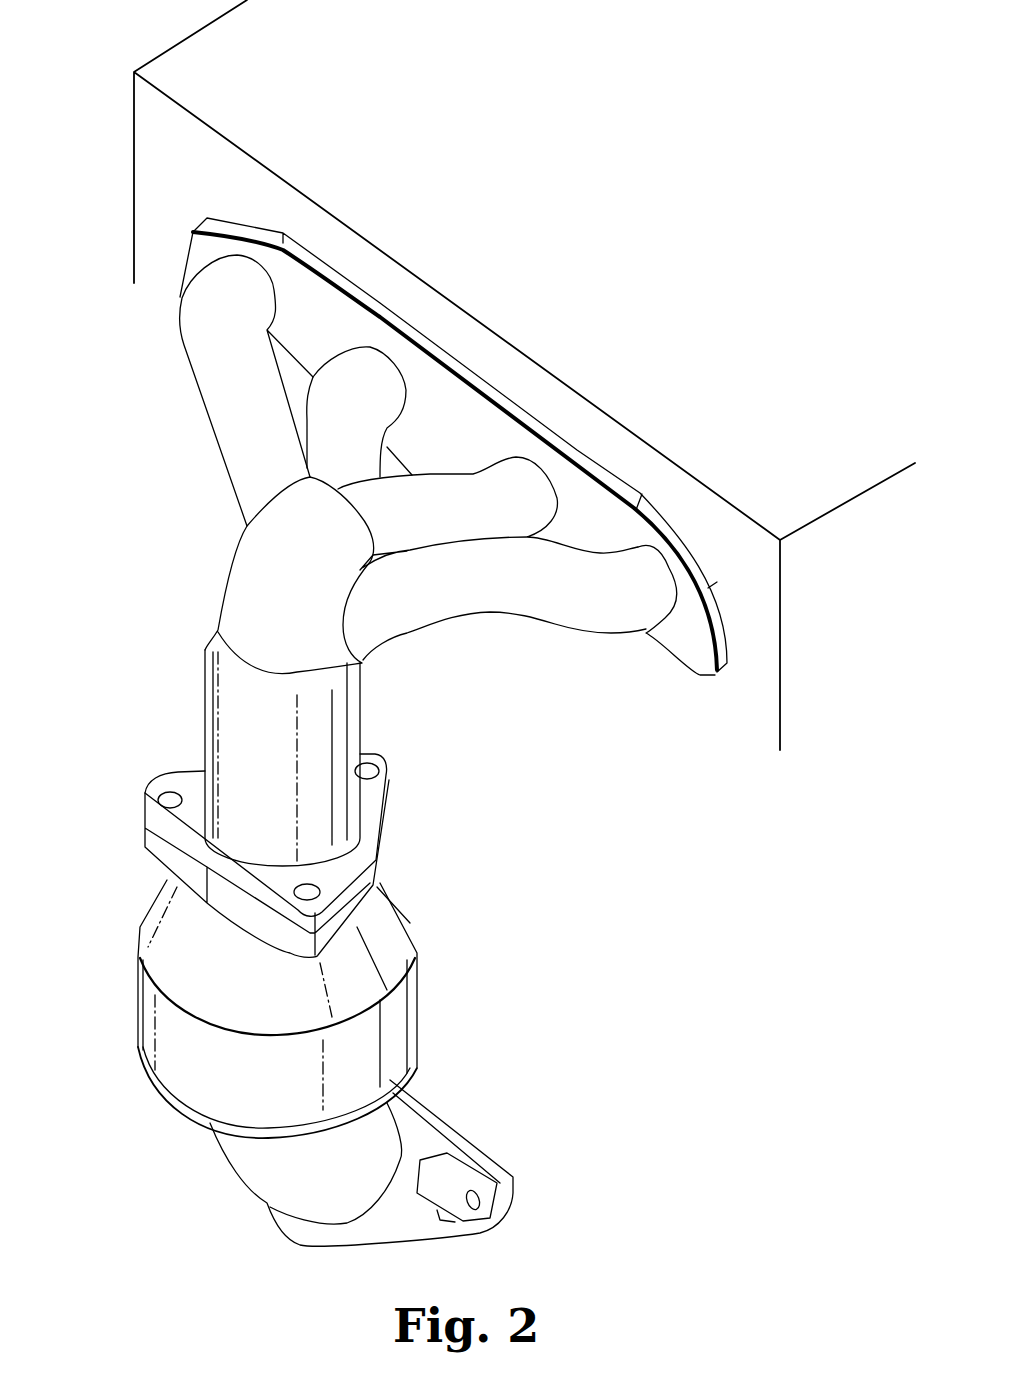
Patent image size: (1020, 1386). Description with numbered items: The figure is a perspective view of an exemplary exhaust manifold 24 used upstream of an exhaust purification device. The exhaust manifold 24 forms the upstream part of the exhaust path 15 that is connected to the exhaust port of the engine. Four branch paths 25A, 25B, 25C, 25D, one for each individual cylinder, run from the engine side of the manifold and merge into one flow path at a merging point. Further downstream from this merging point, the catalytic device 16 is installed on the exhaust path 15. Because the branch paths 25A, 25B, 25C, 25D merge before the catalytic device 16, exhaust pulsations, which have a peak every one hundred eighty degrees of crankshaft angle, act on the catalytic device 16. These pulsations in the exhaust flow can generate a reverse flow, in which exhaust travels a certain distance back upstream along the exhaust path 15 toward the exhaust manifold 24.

The exhaust manifold 24 is at (448, 397).
The branch path 25A is at (243, 289).
The branch path 25B is at (370, 372).
The branch path 25C is at (527, 476).
The branch path 25D is at (652, 570).
The exhaust path 15 is at (190, 726).
The catalytic device 16 is at (123, 1007).